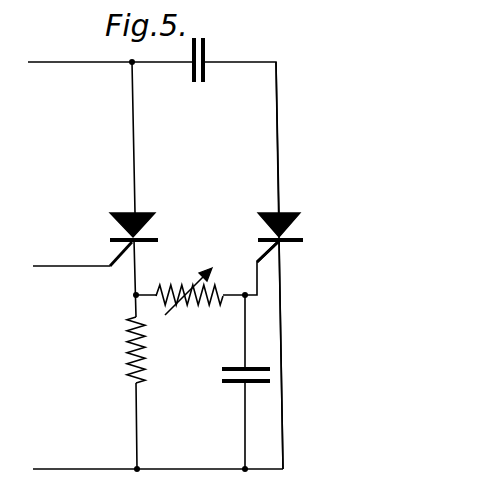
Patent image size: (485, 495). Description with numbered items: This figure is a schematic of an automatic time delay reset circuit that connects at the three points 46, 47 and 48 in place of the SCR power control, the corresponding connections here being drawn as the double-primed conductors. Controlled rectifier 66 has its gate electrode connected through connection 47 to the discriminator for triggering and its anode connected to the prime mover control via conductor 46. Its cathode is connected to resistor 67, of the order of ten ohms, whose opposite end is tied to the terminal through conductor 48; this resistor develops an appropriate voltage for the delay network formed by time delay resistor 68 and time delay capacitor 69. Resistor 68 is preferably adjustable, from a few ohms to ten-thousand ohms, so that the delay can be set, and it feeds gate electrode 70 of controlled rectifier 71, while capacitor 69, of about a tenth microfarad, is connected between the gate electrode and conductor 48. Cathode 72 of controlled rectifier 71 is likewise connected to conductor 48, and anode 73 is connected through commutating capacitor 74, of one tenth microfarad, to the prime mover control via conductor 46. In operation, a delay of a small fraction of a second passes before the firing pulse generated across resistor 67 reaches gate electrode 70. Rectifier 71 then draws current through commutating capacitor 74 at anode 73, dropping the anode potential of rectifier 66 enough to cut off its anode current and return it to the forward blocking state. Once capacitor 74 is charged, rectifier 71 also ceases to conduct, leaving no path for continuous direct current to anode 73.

The connection point 46 is at (49, 62).
The connection point 47 is at (48, 266).
The connection point 48 is at (53, 469).
The controlled rectifier 66 is at (157, 224).
The resistor 67 is at (145, 346).
The time delay resistor 68 is at (218, 306).
The time delay capacitor 69 is at (270, 373).
The gate electrode 70 is at (266, 253).
The controlled rectifier 71 is at (285, 226).
The cathode 72 is at (295, 243).
The anode 73 is at (286, 214).
The commutating capacitor 74 is at (205, 53).